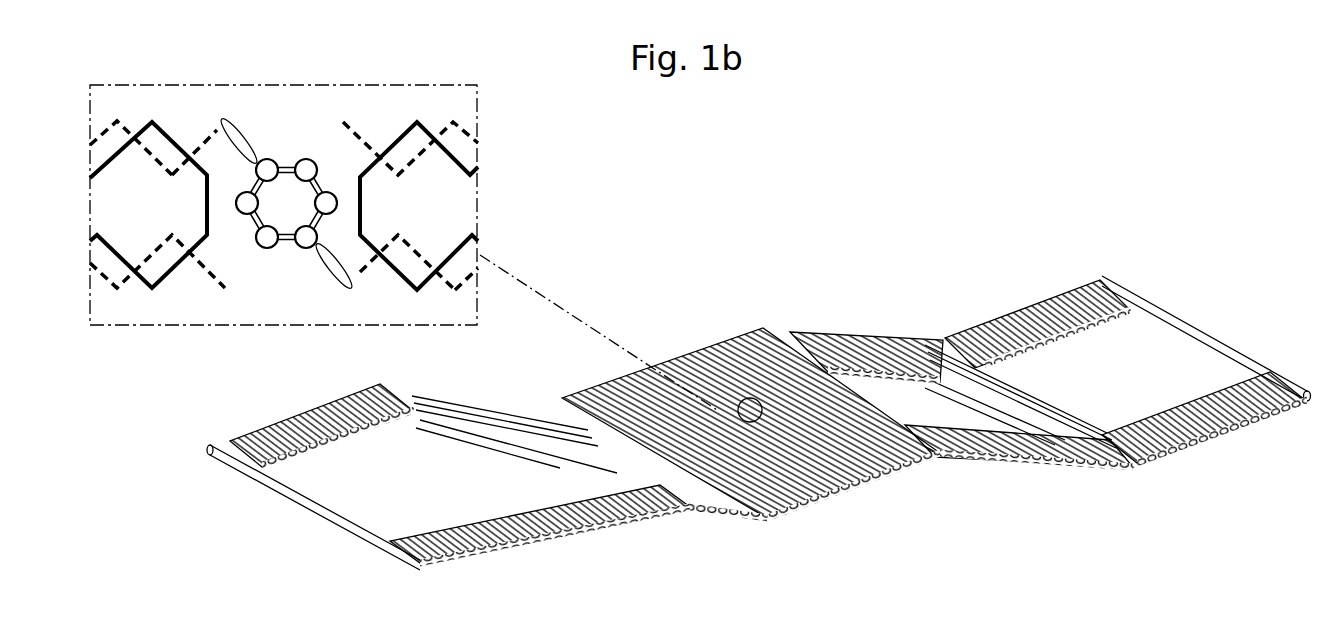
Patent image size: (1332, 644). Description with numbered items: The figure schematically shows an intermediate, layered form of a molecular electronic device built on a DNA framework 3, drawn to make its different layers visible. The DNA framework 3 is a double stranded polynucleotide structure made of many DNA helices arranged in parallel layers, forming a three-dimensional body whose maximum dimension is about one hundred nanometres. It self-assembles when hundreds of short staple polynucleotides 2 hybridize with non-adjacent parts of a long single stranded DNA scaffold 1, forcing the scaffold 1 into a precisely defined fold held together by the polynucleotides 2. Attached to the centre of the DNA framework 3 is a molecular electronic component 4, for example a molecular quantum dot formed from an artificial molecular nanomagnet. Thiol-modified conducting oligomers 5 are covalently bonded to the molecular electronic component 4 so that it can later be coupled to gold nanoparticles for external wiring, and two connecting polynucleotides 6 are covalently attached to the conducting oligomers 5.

The single stranded DNA scaffold 1 is at (152, 127).
The staple polynucleotides 2 is at (462, 130).
The DNA framework 3 is at (850, 366).
The molecular electronic component 4 is at (288, 168).
The conducting oligomers 5 is at (243, 138).
The connecting polynucleotides 6 is at (206, 143).